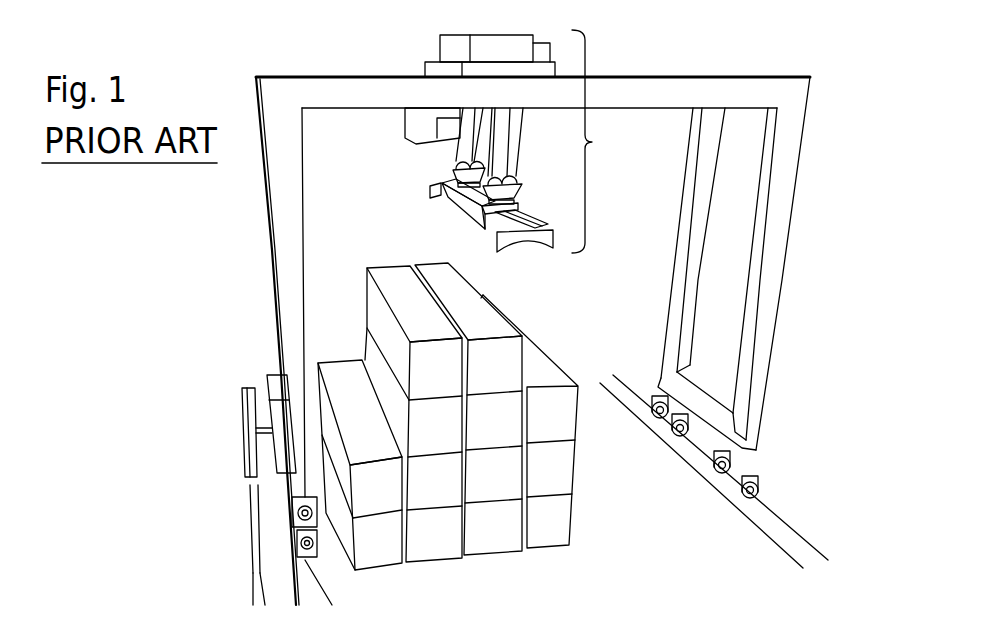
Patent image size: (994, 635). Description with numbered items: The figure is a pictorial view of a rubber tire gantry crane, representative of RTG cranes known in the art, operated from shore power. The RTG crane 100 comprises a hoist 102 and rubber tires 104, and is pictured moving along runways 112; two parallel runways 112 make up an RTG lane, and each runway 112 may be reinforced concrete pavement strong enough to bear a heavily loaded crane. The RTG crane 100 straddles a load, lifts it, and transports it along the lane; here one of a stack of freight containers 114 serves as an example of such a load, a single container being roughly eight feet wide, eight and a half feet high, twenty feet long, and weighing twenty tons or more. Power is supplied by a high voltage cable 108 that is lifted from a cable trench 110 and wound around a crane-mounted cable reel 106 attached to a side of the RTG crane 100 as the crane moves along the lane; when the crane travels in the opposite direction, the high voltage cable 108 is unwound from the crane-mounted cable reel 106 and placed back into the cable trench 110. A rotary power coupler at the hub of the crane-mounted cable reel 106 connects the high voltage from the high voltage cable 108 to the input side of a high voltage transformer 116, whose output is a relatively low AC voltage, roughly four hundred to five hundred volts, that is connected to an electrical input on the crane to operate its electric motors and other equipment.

The RTG crane 100 is at (265, 192).
The hoist 102 is at (592, 142).
The rubber tires 104 is at (743, 508).
The crane-mounted cable reel 106 is at (242, 392).
The high voltage cable 108 is at (250, 489).
The cable trench 110 is at (252, 596).
The runways 112 is at (327, 584).
The stack of freight containers 114 is at (572, 548).
The high voltage transformer 116 is at (268, 375).